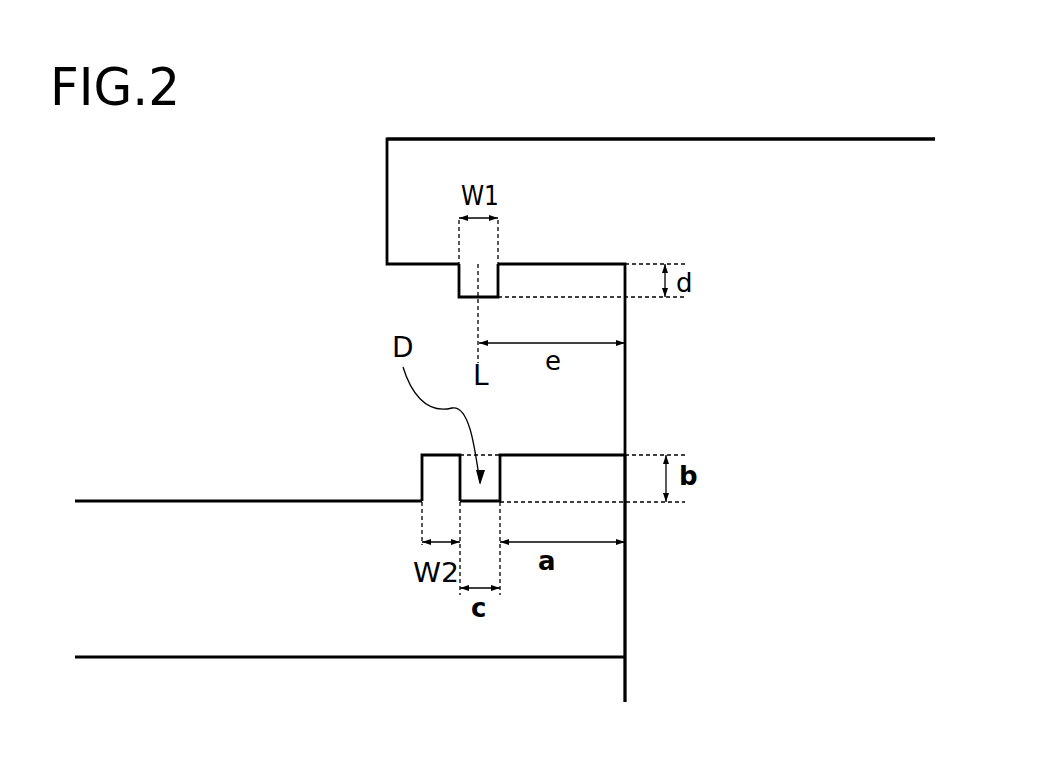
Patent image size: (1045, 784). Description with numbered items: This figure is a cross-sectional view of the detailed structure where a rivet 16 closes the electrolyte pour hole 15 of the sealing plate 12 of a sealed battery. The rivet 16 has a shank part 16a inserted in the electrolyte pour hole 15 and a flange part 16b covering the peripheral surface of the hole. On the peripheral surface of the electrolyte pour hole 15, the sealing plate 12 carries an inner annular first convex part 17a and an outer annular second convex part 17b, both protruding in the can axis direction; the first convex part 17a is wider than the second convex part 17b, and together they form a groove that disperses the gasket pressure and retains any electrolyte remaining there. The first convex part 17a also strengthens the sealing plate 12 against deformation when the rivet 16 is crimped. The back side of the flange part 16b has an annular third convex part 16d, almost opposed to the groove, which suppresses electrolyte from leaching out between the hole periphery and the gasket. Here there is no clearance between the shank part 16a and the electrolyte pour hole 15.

The sealing plate 12 is at (227, 598).
The electrolyte pour hole 15 is at (633, 637).
The rivet 16 is at (850, 448).
The shank part 16a is at (742, 392).
The flange part 16b is at (562, 213).
The third convex part 16d is at (470, 282).
The first convex part 17a is at (537, 485).
The second convex part 17b is at (438, 478).